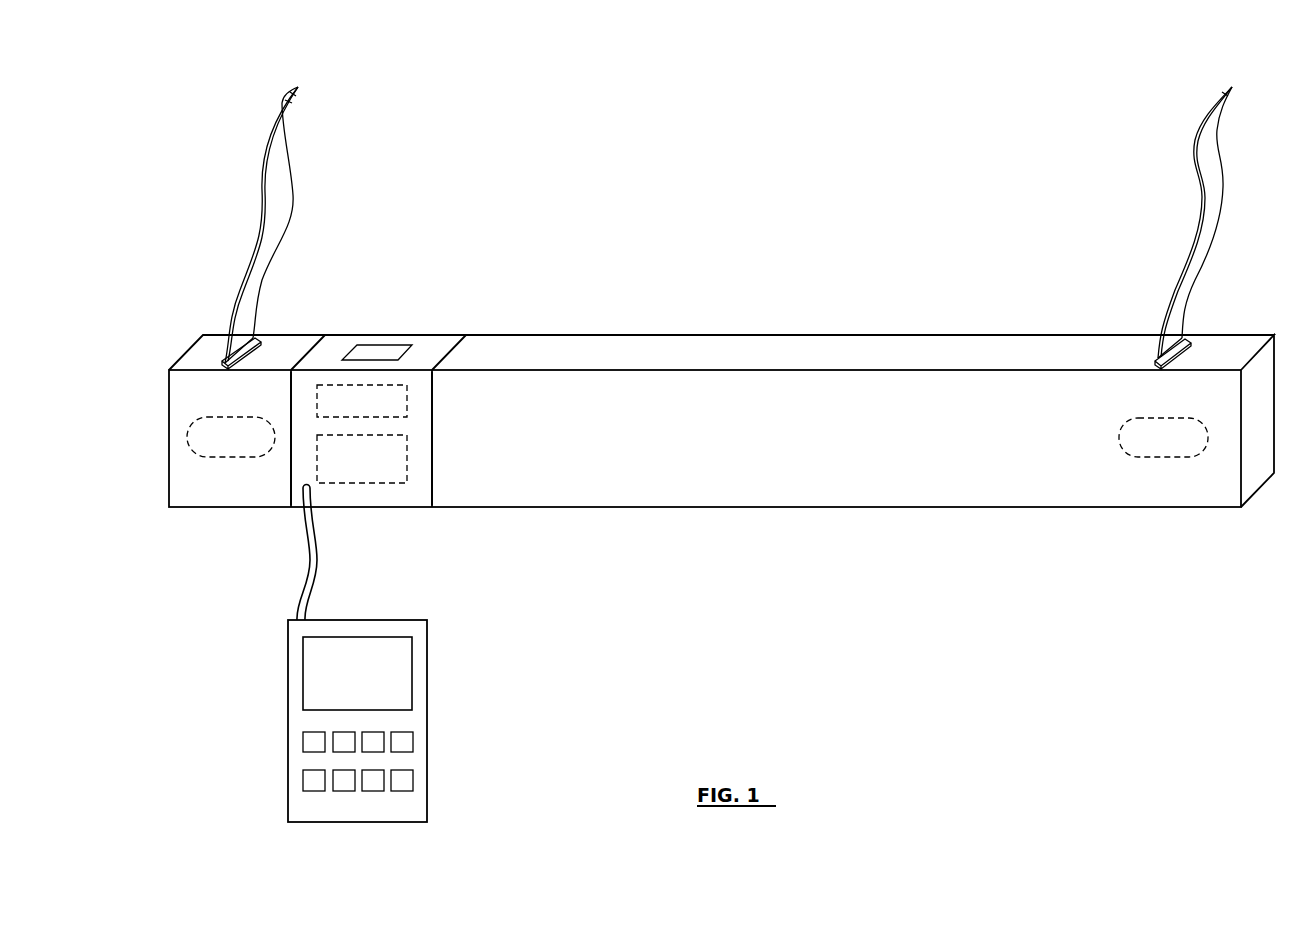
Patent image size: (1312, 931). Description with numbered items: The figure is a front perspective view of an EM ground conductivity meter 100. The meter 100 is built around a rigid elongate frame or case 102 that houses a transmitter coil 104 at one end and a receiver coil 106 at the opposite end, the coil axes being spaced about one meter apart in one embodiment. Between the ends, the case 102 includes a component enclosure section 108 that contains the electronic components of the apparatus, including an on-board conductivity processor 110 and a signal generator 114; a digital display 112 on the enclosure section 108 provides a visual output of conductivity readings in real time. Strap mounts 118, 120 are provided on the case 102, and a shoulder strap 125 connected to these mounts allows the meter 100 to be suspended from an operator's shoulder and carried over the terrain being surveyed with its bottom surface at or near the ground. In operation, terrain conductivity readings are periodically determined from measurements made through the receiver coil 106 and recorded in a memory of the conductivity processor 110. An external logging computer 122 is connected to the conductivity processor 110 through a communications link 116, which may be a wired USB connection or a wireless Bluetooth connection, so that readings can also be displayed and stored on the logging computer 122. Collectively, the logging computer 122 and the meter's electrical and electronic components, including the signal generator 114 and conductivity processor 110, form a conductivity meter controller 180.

The EM ground conductivity meter 100 is at (738, 166).
The frame or case 102 is at (786, 337).
The transmitter coil 104 is at (1159, 457).
The receiver coil 106 is at (223, 457).
The component enclosure section 108 is at (345, 337).
The conductivity processor 110 is at (407, 455).
The digital display 112 is at (387, 350).
The signal generator 114 is at (407, 400).
The cable 116 is at (318, 535).
The strap mount 118 is at (1187, 337).
The strap mount 120 is at (220, 362).
The external logging computer 122 is at (427, 670).
The shoulder strap 125 is at (282, 167).
The conductivity meter controller 180 is at (288, 636).